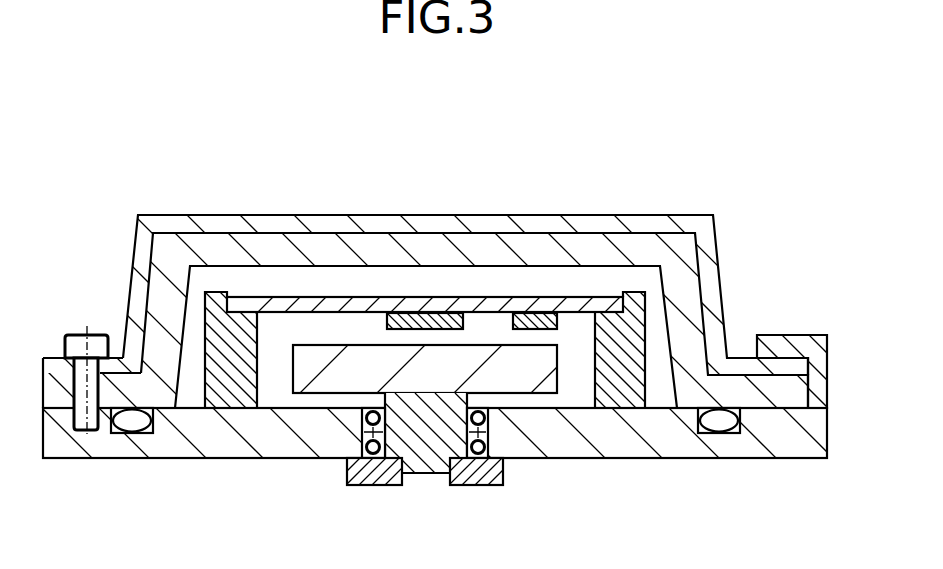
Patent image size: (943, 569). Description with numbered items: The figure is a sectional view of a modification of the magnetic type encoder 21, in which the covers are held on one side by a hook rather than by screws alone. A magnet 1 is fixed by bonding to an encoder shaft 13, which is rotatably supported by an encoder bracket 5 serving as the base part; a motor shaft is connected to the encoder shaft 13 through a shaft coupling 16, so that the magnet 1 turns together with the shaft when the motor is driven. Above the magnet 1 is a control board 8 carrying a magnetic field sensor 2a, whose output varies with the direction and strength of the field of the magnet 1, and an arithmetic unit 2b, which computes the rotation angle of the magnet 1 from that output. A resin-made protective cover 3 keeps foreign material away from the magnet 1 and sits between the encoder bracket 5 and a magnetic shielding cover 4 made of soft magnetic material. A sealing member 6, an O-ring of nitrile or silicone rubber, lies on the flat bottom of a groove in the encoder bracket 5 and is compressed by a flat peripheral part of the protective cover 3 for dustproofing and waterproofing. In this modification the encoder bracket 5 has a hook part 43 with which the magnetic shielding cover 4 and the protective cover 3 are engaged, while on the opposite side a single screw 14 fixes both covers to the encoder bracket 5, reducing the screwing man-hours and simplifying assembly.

The magnet 1 is at (361, 370).
The magnetic field sensor 2a is at (423, 315).
The arithmetic unit 2b is at (532, 313).
The protective cover 3 is at (616, 247).
The magnetic shielding cover 4 is at (678, 225).
The encoder bracket 5 is at (182, 448).
The sealing member 6 is at (718, 425).
The control board 8 is at (478, 303).
The encoder shaft 13 is at (425, 450).
The screw 14 is at (75, 346).
The shaft coupling 16 is at (473, 483).
The encoder 21 is at (133, 179).
The hook part 43 is at (778, 347).